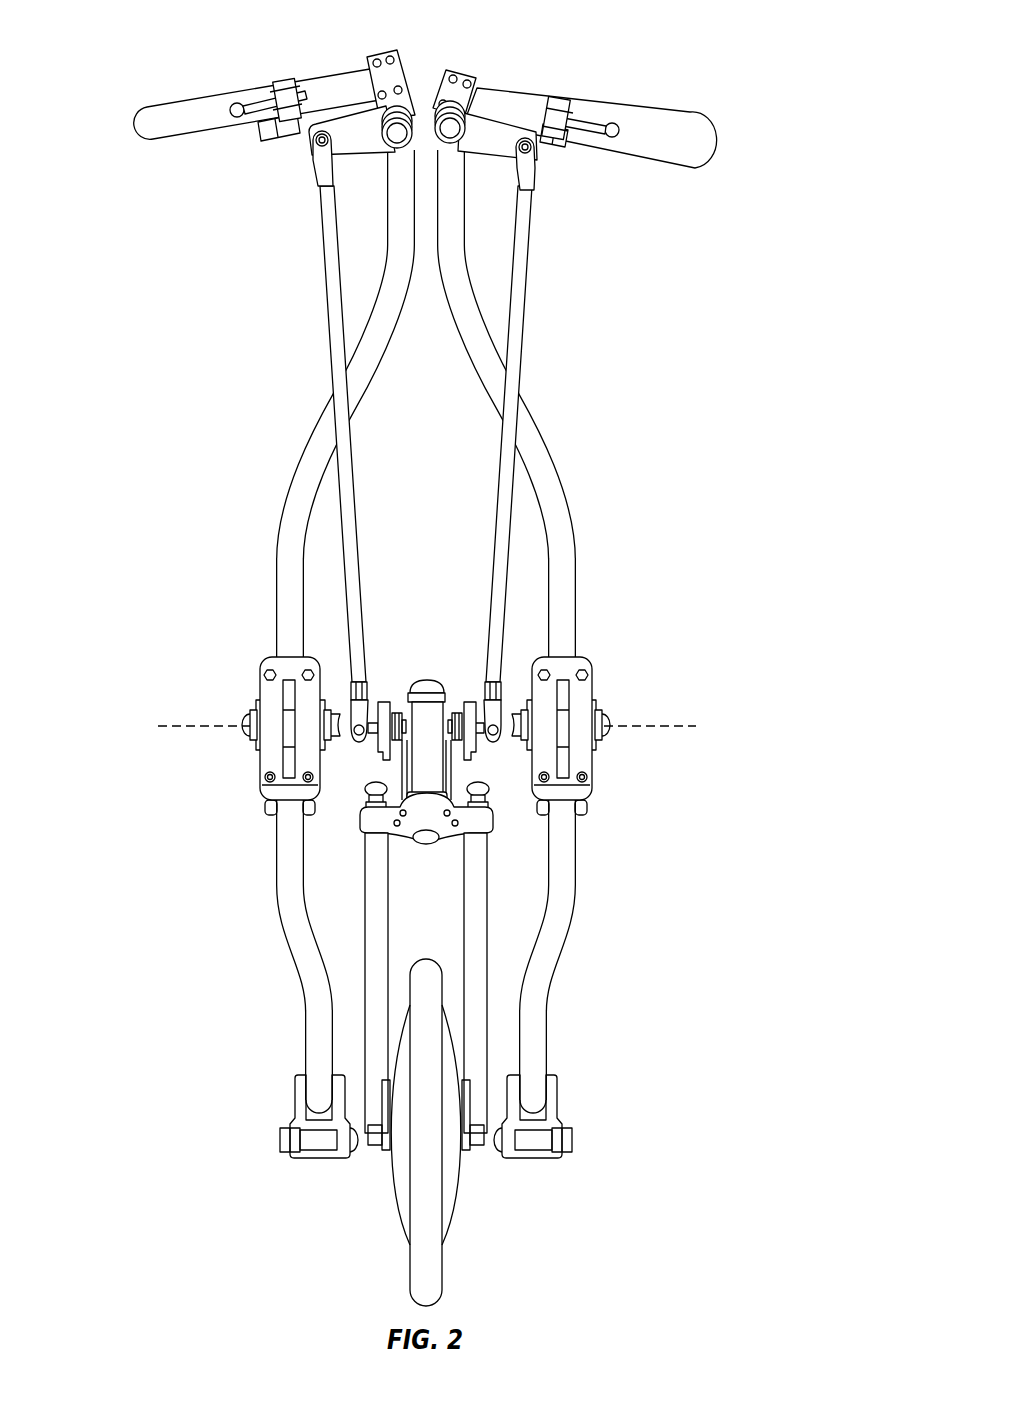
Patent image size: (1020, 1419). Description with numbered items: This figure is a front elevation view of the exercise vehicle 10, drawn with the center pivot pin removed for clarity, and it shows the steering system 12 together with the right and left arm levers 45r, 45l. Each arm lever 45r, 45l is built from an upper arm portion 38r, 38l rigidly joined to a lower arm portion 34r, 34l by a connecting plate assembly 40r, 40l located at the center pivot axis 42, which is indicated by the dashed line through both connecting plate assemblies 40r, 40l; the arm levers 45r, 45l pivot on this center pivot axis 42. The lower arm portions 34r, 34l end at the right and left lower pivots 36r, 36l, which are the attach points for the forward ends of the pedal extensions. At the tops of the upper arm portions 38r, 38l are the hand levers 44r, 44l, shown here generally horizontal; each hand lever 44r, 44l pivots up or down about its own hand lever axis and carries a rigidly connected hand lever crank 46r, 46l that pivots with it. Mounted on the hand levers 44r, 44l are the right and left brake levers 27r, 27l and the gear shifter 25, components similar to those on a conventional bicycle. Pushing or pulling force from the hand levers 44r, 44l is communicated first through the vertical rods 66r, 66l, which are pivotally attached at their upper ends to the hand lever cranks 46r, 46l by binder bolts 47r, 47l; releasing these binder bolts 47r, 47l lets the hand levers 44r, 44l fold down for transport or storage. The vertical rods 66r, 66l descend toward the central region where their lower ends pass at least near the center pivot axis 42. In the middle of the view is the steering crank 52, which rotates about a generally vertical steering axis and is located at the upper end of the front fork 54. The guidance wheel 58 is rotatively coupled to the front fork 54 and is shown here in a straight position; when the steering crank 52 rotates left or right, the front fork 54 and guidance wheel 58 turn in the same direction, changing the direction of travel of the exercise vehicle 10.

The exercise vehicle 10 is at (180, 37).
The steering system 12 is at (476, 629).
The gear shifter 25 is at (262, 136).
The right brake lever 27r is at (288, 90).
The left brake lever 27l is at (617, 84).
The right lower arm portion 34r is at (276, 866).
The left lower arm portion 34l is at (577, 878).
The right lower pivot 36r is at (278, 1140).
The left lower pivot 36l is at (575, 1140).
The right upper arm portion 38r is at (300, 440).
The left upper arm portion 38l is at (552, 440).
The right connecting plate assembly 40r is at (246, 676).
The left connecting plate assembly 40l is at (606, 676).
The center pivot axis 42 is at (197, 728).
The right hand lever 44r is at (165, 108).
The left hand lever 44l is at (748, 129).
The right arm lever 45r is at (275, 572).
The left arm lever 45l is at (577, 572).
The right hand lever crank 46r is at (374, 158).
The left hand lever crank 46l is at (500, 162).
The right binder bolt 47r is at (318, 147).
The left binder bolt 47l is at (535, 150).
The steering crank 52 is at (363, 822).
The front fork 54 is at (390, 868).
The guidance wheel 58 is at (445, 1281).
The right vertical rod 66r is at (325, 312).
The left vertical rod 66l is at (528, 312).